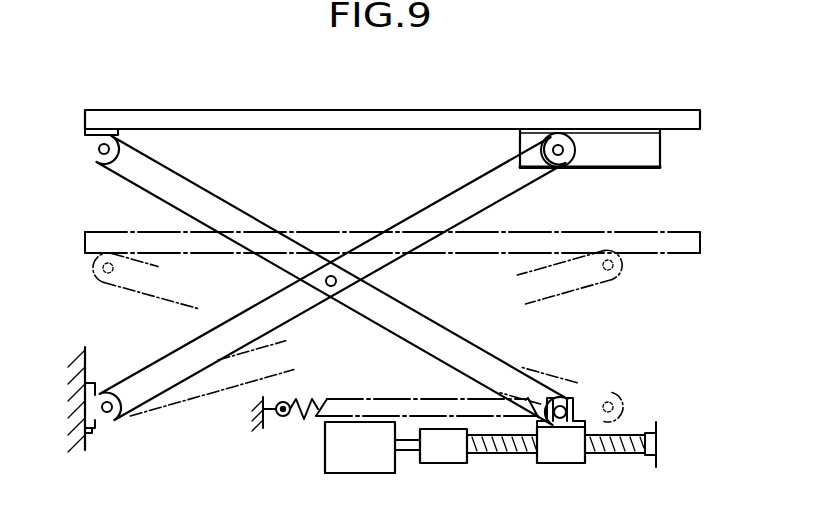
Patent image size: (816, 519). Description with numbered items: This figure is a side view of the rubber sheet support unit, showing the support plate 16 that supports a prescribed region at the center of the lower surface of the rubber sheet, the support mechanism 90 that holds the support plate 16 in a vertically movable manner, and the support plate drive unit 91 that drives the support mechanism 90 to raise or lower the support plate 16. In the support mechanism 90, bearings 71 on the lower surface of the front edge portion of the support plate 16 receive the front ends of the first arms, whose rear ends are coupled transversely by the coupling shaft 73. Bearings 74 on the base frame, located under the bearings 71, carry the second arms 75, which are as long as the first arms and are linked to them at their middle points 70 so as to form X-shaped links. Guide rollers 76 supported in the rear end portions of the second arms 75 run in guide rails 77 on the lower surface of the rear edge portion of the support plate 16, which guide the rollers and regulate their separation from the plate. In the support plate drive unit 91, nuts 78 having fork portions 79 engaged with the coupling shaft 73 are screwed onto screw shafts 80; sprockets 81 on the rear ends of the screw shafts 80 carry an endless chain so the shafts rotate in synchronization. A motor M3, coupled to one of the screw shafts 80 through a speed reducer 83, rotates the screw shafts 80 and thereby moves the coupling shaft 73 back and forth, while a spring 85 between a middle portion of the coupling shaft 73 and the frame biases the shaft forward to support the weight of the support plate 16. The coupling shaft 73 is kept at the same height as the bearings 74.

The support plate 16 is at (248, 110).
The middle points 70 is at (333, 290).
The bearings 71 is at (90, 142).
The coupling shaft 73 is at (562, 398).
The bearings 74 is at (95, 383).
The second arms 75 is at (143, 368).
The guide rollers 76 is at (576, 160).
The guide rails 77 is at (643, 170).
The nuts 78 is at (570, 463).
The fork portion 79 is at (590, 385).
The screw shafts 80 is at (513, 456).
The sprockets 81 is at (658, 432).
The speed reducer 83 is at (457, 463).
The spring 85 is at (375, 398).
The support mechanism 90 is at (83, 207).
The support plate drive unit 91 is at (278, 445).
The motor M3 is at (362, 473).